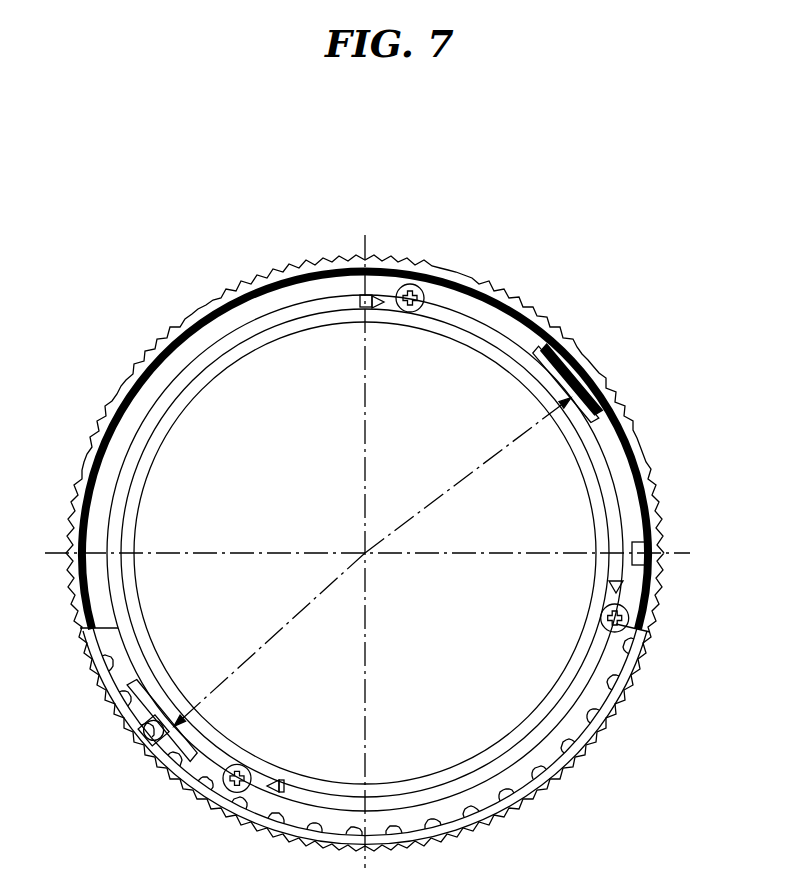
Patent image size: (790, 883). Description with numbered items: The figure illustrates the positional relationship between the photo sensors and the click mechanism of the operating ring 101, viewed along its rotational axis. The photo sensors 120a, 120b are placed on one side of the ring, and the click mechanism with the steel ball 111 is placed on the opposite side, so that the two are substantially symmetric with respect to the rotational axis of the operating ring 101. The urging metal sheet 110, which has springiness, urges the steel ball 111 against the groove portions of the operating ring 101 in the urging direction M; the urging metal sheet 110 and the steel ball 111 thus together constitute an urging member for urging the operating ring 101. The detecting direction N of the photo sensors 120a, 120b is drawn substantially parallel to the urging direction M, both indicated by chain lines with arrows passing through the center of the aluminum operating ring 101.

The operating ring 101 is at (651, 478).
The urging metal sheet 110 is at (126, 713).
The steel ball 111 is at (150, 741).
The photo sensor 120a is at (647, 370).
The photo sensor 120b is at (578, 347).
The urging direction M is at (122, 757).
The detecting direction N is at (608, 350).